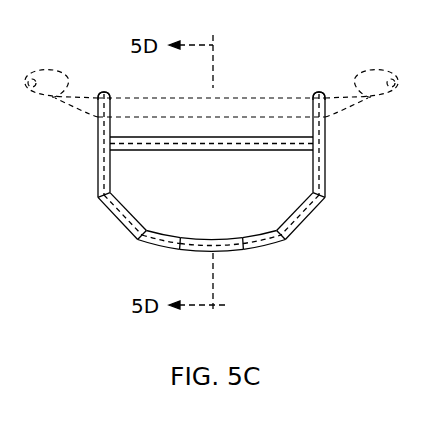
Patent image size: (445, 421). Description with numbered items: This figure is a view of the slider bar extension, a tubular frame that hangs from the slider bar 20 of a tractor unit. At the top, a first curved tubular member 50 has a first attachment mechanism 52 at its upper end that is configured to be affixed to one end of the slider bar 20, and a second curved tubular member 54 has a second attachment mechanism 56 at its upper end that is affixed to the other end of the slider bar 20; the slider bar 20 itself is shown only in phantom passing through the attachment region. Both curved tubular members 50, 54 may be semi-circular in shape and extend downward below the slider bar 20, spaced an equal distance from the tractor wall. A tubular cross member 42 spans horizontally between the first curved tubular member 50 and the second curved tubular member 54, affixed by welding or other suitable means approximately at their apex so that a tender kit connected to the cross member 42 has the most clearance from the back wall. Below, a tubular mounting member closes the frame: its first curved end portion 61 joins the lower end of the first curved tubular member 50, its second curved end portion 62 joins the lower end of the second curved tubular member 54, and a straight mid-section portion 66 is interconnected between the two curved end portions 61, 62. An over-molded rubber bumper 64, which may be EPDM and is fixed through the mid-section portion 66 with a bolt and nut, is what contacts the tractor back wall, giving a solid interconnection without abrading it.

The slider bar 20 is at (383, 100).
The tubular cross member 42 is at (287, 150).
The first curved tubular member 50 is at (98, 165).
The first attachment mechanism 52 is at (101, 92).
The second curved tubular member 54 is at (325, 177).
The second attachment mechanism 56 is at (317, 92).
The first curved end portion 61 is at (137, 240).
The second curved end portion 62 is at (304, 222).
The over-molded rubber bumper 64 is at (218, 239).
The straight mid-section portion 66 is at (255, 253).